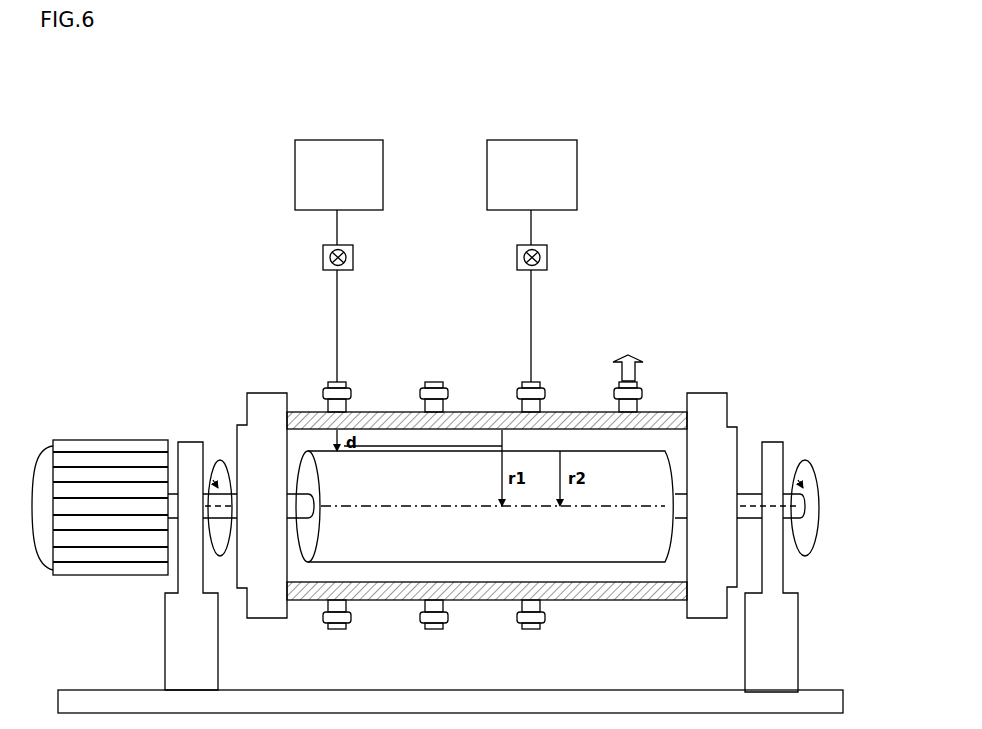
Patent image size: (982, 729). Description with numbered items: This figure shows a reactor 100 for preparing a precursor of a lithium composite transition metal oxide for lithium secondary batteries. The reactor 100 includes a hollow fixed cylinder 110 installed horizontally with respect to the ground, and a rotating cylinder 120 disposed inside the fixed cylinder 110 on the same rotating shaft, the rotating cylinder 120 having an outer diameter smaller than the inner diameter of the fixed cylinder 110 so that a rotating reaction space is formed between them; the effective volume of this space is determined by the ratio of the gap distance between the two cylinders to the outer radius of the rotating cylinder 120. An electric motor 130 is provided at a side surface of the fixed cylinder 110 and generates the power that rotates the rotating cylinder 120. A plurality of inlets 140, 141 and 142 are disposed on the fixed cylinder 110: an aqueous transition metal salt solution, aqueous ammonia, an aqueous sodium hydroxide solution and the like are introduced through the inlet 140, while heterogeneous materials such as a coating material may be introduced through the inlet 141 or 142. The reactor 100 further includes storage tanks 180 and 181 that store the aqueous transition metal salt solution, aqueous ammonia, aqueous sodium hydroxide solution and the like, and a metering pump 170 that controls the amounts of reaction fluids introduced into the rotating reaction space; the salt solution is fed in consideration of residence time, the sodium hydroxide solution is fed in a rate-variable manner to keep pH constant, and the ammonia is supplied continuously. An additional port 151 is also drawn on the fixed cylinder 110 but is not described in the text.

The reactor 100 is at (726, 380).
The hollow fixed cylinder 110 is at (589, 604).
The rotating cylinder 120 is at (655, 567).
The electric motor 130 is at (96, 582).
The inlet 140 is at (352, 378).
The inlet 141 is at (444, 378).
The inlet 142 is at (542, 378).
The exhaust port 151 is at (644, 352).
The metering pump 170 is at (322, 258).
The storage tank 180 is at (533, 132).
The storage tank 181 is at (340, 132).